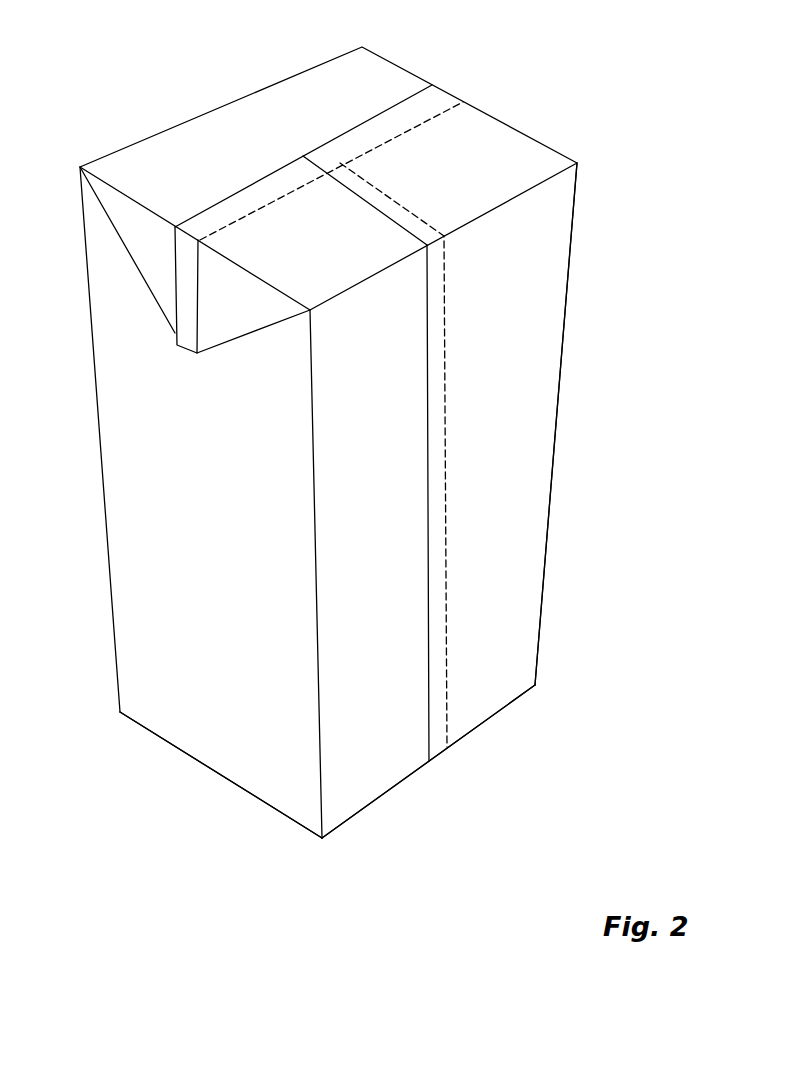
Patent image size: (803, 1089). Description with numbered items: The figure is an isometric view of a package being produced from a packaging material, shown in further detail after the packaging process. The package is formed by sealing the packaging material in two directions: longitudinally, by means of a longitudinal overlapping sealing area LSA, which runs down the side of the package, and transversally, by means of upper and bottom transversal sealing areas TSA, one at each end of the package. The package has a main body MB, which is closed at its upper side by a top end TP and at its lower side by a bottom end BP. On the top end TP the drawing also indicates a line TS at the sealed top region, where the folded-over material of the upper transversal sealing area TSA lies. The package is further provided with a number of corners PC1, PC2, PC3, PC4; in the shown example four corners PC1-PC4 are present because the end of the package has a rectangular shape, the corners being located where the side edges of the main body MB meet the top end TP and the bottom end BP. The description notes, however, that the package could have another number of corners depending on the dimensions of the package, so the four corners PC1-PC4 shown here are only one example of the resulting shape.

The top seal TS is at (363, 137).
The transversal sealing area TSA is at (430, 107).
The top end TP is at (533, 153).
The longitudinal overlapping sealing area LSA is at (437, 415).
The main body MB is at (330, 483).
The bottom end BP is at (507, 720).
The corner PC1 is at (557, 687).
The corner PC2 is at (578, 583).
The corner PC3 is at (108, 705).
The corner PC4 is at (340, 838).